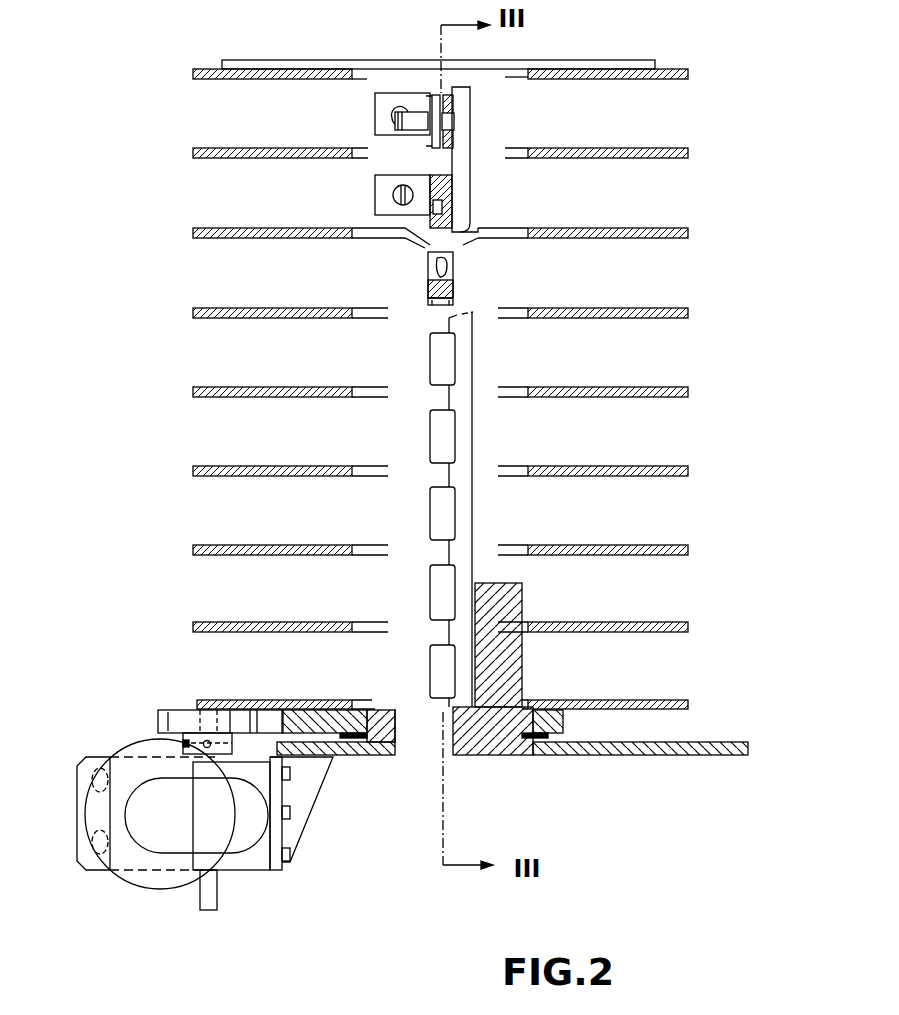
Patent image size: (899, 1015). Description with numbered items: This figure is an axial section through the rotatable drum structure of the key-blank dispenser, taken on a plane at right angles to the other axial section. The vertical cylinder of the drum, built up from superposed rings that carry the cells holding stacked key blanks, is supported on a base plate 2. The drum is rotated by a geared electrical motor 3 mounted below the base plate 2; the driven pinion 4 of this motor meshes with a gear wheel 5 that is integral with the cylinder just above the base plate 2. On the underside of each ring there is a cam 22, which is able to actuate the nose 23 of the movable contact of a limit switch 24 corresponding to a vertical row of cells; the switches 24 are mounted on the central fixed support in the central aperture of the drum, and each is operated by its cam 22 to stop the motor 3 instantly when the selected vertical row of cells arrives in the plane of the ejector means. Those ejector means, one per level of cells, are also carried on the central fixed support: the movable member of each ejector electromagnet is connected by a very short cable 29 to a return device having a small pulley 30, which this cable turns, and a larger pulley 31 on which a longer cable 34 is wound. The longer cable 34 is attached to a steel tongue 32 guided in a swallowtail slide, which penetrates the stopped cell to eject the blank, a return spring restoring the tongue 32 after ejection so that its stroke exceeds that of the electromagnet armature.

The base plate 2 is at (533, 758).
The geared electrical motor 3 is at (175, 882).
The driven pinion 4 is at (223, 720).
The gear wheel 5 is at (165, 718).
The cam 22 is at (424, 244).
The nose of the movable contact 23 is at (430, 257).
The limit switch 24 is at (450, 254).
The cable 29 is at (393, 120).
The small pulley 30 is at (393, 130).
The larger pulley 31 is at (428, 135).
The steel tongue 32 is at (445, 152).
The longer cable 34 is at (448, 105).